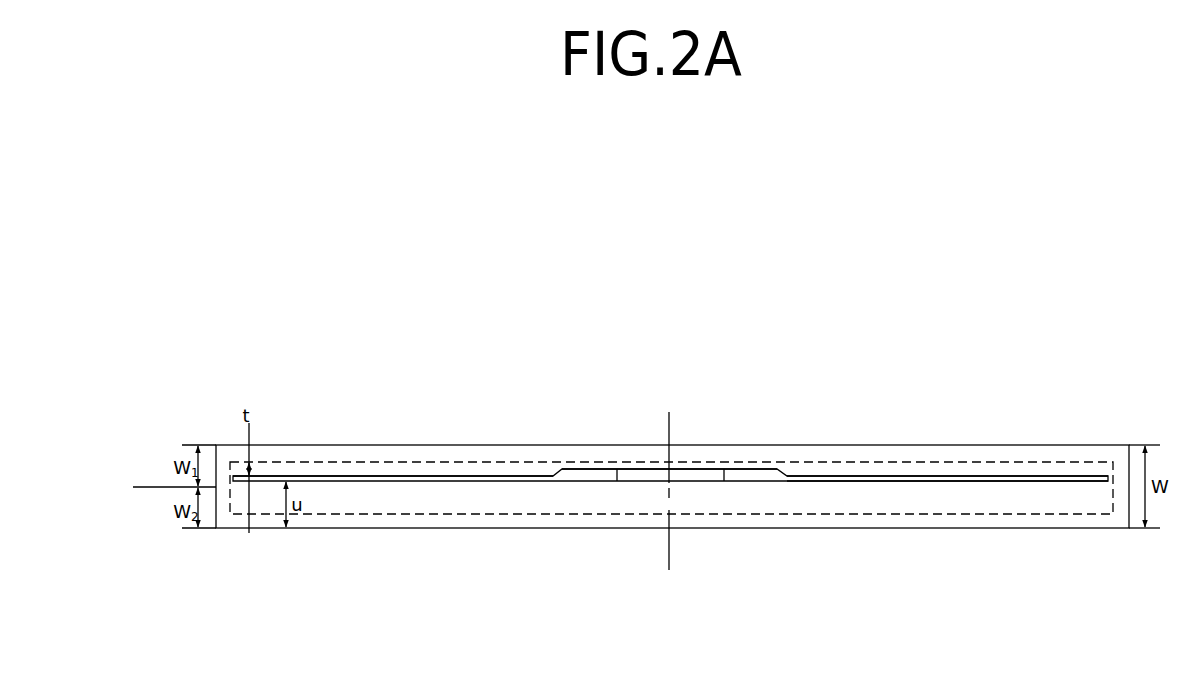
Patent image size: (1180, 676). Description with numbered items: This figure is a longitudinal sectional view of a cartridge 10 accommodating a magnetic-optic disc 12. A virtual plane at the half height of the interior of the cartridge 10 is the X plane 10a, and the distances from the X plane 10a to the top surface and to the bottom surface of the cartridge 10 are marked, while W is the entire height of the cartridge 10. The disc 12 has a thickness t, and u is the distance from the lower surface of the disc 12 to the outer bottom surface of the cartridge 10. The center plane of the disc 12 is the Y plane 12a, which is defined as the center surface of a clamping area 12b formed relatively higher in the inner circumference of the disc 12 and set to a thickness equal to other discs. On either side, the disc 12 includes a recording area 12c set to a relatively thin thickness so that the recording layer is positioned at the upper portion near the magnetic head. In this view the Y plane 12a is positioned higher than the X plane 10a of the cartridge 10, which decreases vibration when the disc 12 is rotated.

The cartridge 10 is at (355, 457).
The X plane 10a is at (157, 489).
The magnetic-optic disc 12 is at (300, 476).
The Y plane 12a is at (870, 476).
The clamping area 12b is at (787, 617).
The recording area 12c is at (549, 604).